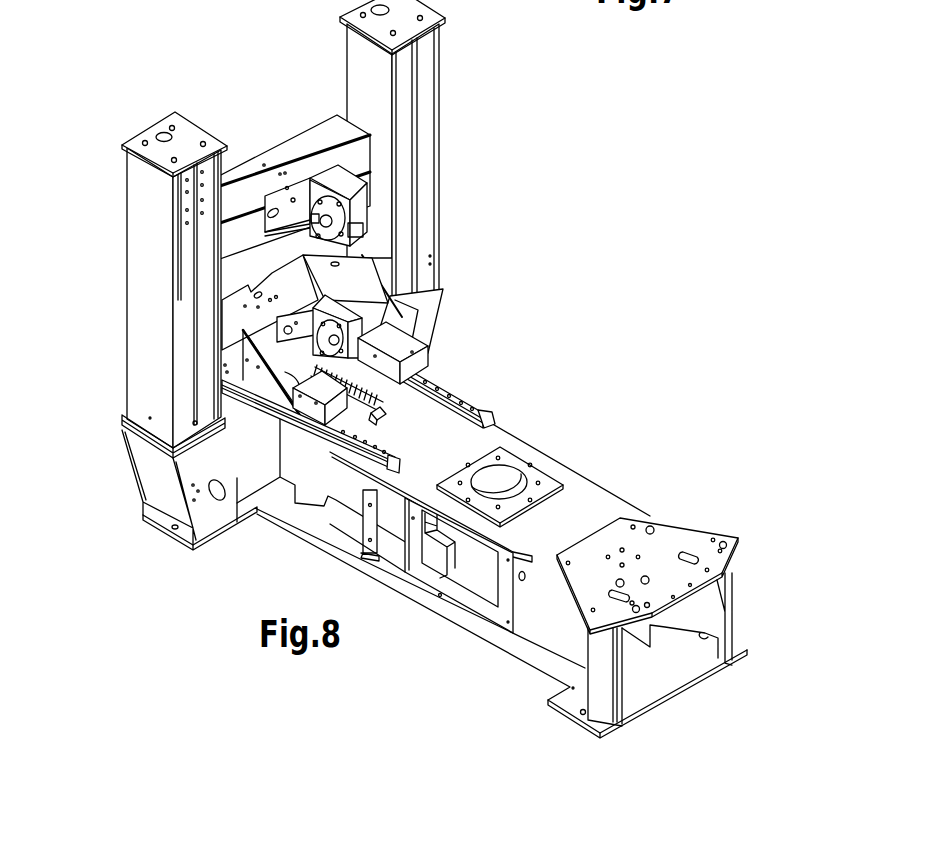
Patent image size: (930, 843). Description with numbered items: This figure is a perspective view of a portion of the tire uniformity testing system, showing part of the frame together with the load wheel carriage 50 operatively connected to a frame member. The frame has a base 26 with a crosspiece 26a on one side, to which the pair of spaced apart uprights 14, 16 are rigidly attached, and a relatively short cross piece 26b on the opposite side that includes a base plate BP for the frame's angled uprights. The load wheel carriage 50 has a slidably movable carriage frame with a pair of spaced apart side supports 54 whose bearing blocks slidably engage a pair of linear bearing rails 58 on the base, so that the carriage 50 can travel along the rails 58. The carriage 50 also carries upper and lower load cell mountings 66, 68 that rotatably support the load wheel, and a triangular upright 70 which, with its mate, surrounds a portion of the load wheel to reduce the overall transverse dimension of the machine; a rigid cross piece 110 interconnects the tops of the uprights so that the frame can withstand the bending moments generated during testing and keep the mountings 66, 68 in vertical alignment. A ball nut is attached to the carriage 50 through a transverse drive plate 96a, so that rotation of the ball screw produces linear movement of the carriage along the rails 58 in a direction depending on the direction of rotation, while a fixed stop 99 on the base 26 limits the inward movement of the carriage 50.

The upright 14 is at (422, 117).
The upright 16 is at (150, 282).
The base 26 is at (614, 484).
The crosspiece 26a is at (210, 518).
The cross piece 26b is at (652, 673).
The base plate BP is at (668, 542).
The load wheel carriage 50 is at (404, 300).
The side support 54 is at (410, 357).
The linear bearing rail 58 is at (463, 397).
The upper load cell mounting 66 is at (345, 222).
The lower load cell mounting 68 is at (342, 342).
The upright 70 is at (360, 248).
The transverse drive plate 96a is at (260, 330).
The fixed stop 99 is at (380, 416).
The cross piece 110 is at (276, 165).